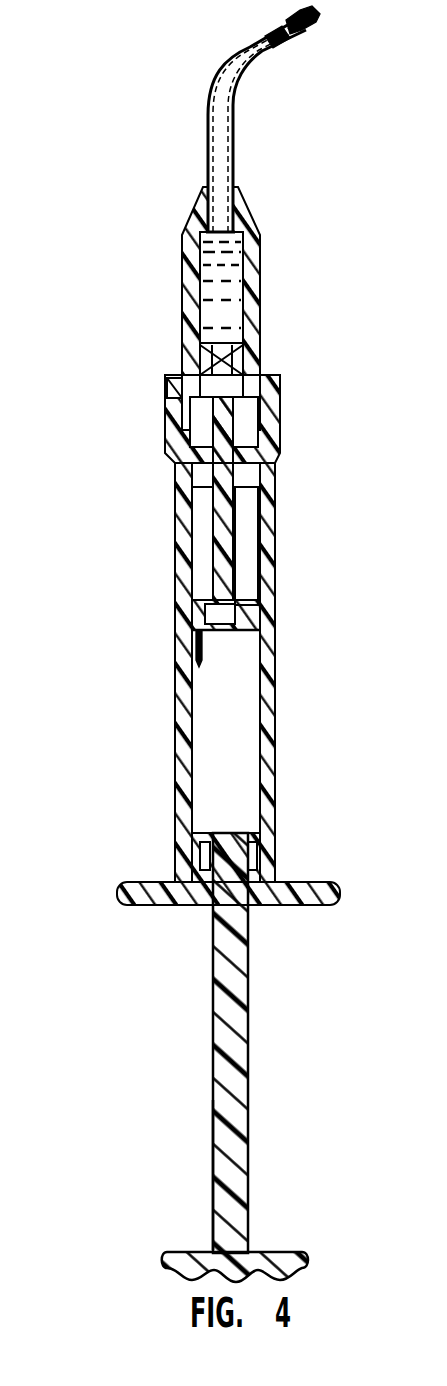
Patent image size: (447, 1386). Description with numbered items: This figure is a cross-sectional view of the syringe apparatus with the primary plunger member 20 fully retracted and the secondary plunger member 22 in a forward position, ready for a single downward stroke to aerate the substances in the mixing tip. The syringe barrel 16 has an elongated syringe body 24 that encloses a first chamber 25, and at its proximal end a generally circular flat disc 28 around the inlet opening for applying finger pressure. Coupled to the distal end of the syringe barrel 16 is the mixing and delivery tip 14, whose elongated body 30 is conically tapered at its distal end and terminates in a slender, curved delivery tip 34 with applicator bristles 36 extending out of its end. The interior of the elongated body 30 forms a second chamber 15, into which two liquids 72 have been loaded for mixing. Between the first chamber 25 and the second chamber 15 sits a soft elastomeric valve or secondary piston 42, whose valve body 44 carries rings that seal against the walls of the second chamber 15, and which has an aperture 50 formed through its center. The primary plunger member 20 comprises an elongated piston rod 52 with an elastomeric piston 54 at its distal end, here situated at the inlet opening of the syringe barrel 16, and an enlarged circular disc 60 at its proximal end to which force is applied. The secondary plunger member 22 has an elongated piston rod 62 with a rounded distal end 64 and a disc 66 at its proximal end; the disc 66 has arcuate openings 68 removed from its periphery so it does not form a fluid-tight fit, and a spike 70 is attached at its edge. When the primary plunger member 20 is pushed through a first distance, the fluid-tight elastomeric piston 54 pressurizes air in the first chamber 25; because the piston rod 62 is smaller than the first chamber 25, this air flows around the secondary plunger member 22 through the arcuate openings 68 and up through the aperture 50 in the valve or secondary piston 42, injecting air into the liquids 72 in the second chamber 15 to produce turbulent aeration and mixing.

The mixing and delivery tip 14 is at (262, 281).
The second chamber 15 is at (186, 328).
The syringe barrel 16 is at (172, 727).
The primary plunger member 20 is at (252, 1095).
The secondary plunger member 22 is at (200, 510).
The syringe body 24 is at (275, 570).
The first chamber 25 is at (247, 552).
The flat disc 28 is at (340, 895).
The elongated body 30 is at (261, 315).
The delivery tip 34 is at (234, 131).
The applicator bristles 36 is at (308, 32).
The valve or secondary piston 42 is at (184, 356).
The valve body 44 is at (262, 347).
The aperture 50 is at (167, 385).
The piston rod 52 is at (246, 995).
The elastomeric piston 54 is at (250, 860).
The enlarged circular disc 60 is at (302, 1265).
The piston rod 62 is at (196, 540).
The rounded distal end 64 is at (283, 410).
The disc 66 is at (265, 597).
The arcuate openings 68 is at (195, 630).
The spike 70 is at (230, 660).
The liquids 72 is at (183, 288).